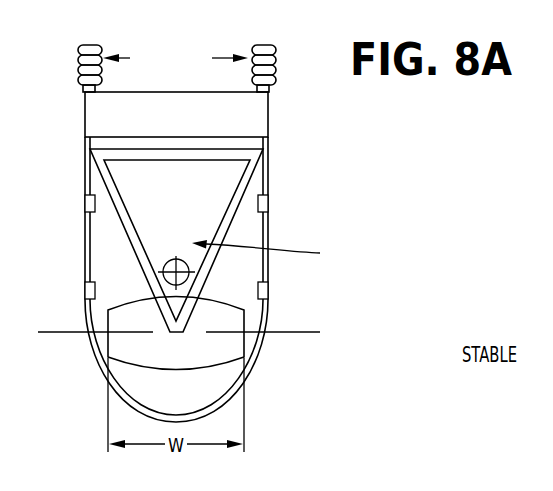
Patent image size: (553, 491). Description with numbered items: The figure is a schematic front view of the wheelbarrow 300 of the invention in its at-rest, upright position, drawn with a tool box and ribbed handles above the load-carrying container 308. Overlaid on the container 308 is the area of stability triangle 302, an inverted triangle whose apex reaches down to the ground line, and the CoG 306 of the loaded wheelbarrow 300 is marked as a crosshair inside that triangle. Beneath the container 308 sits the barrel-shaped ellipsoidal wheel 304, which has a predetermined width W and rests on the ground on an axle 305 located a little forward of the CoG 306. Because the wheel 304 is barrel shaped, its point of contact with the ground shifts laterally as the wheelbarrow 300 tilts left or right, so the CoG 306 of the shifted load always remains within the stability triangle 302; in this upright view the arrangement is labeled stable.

The wheelbarrow 300 is at (240, 232).
The stability triangle 302 is at (232, 222).
The barrel-shaped ellipsoidal wheel 304 is at (235, 345).
The axle 305 is at (302, 334).
The CoG 306 is at (181, 257).
The container 308 is at (269, 312).